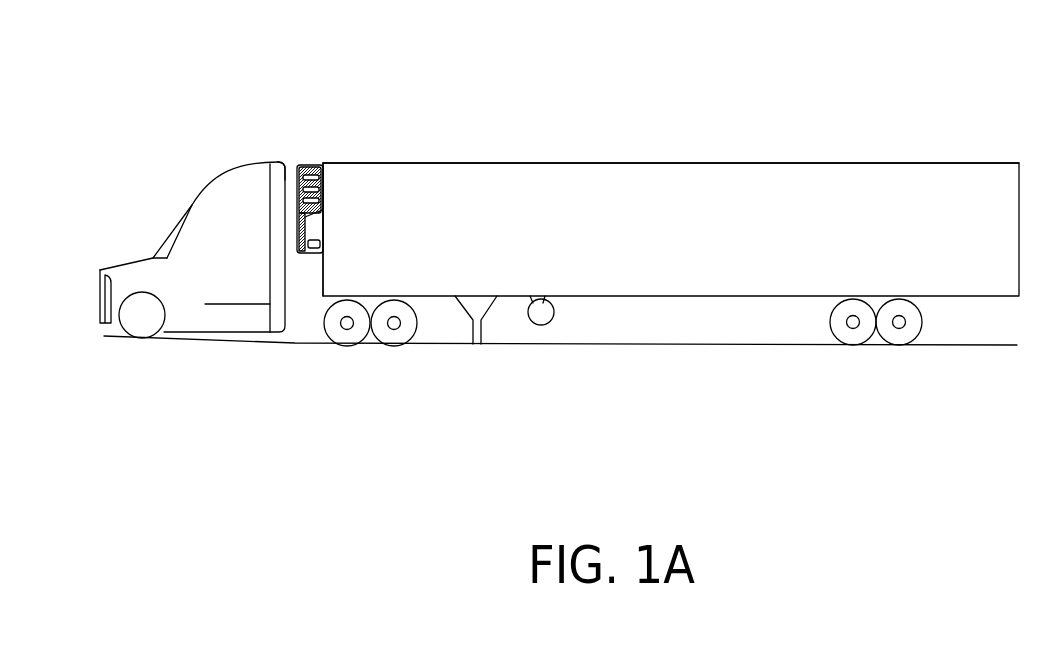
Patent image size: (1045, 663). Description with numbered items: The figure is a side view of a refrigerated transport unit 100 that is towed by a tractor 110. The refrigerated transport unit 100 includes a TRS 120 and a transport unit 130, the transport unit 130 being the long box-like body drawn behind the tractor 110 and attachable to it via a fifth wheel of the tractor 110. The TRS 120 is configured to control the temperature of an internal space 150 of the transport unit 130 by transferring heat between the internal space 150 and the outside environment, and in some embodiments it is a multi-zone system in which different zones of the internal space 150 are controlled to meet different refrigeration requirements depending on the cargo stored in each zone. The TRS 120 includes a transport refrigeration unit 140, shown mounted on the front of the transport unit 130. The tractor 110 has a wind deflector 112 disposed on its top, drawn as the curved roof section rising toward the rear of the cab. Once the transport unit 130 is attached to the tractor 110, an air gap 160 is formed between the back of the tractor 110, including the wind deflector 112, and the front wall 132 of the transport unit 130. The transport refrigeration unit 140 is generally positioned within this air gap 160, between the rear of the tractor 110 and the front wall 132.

The refrigerated transport unit 100 is at (559, 249).
The tractor 110 is at (192, 231).
The wind deflector 112 is at (223, 178).
The TRS 120 is at (649, 257).
The transport unit 130 is at (819, 177).
The front wall 132 is at (323, 266).
The transport refrigeration unit 140 is at (300, 165).
The internal space 150 is at (700, 191).
The air gap 160 is at (272, 160).